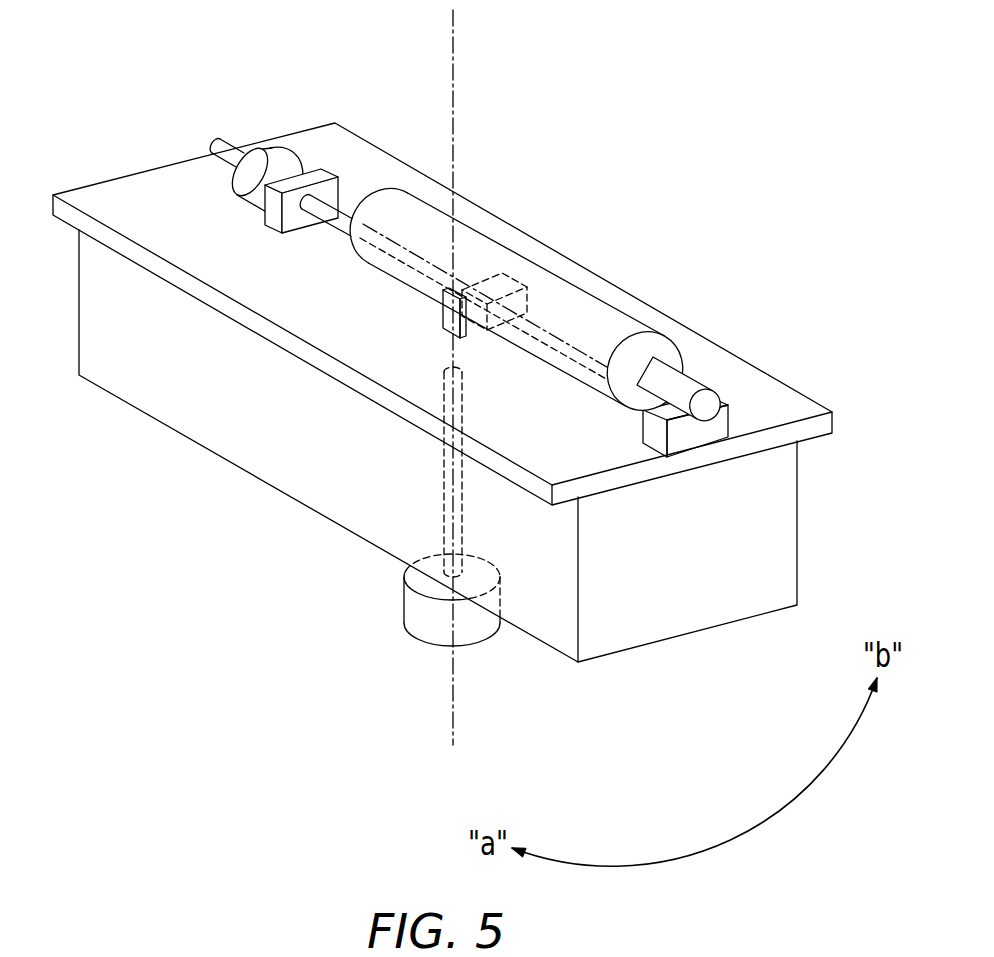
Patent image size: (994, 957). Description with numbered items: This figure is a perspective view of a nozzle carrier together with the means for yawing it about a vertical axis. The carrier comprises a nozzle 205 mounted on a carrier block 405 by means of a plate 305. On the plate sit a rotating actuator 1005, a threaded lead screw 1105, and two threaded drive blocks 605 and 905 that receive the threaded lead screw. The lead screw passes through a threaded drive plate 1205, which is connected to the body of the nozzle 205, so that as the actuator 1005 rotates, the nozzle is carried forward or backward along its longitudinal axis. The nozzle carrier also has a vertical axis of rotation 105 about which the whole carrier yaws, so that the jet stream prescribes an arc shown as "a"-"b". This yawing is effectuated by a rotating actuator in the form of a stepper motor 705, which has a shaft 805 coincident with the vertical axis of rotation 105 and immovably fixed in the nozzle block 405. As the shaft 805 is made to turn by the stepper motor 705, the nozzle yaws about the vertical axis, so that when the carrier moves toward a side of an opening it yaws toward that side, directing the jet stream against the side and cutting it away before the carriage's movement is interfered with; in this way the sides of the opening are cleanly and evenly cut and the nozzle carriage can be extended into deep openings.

The vertical axis of rotation 105 is at (455, 36).
The nozzle 205 is at (573, 270).
The plate 305 is at (747, 360).
The carrier block 405 is at (707, 585).
The threaded drive block 605 is at (648, 440).
The stepper motor 705 is at (417, 637).
The shaft 805 is at (440, 500).
The threaded drive block 905 is at (272, 213).
The rotating actuator 1005 is at (290, 148).
The threaded lead screw 1105 is at (353, 213).
The threaded drive plate 1205 is at (441, 322).